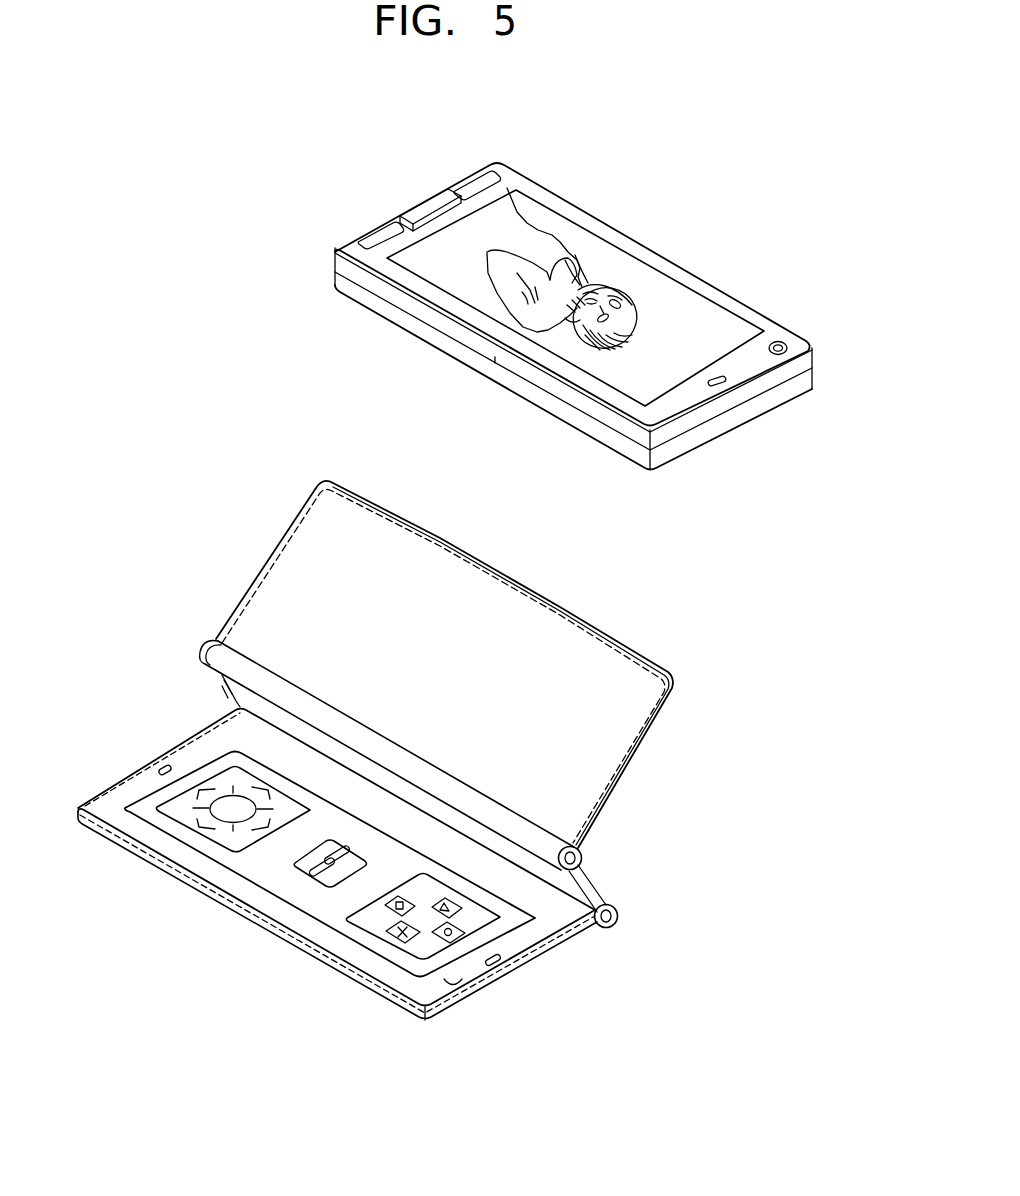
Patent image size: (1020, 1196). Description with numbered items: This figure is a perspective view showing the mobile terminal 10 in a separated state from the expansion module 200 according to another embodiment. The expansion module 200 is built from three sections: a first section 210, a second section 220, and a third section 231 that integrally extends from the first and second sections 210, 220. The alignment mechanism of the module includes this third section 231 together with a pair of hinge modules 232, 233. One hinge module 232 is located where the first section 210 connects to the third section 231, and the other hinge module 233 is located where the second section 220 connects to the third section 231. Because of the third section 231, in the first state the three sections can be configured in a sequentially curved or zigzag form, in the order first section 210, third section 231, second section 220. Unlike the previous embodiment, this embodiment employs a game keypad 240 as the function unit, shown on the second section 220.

The mobile terminal 10 is at (394, 180).
The cradle 200 is at (138, 634).
The first section 210 is at (243, 556).
The second section 220 is at (110, 771).
The third section 231 is at (220, 692).
The hinge module 232 is at (580, 861).
The hinge module 233 is at (614, 921).
The game keypad 240 is at (202, 763).